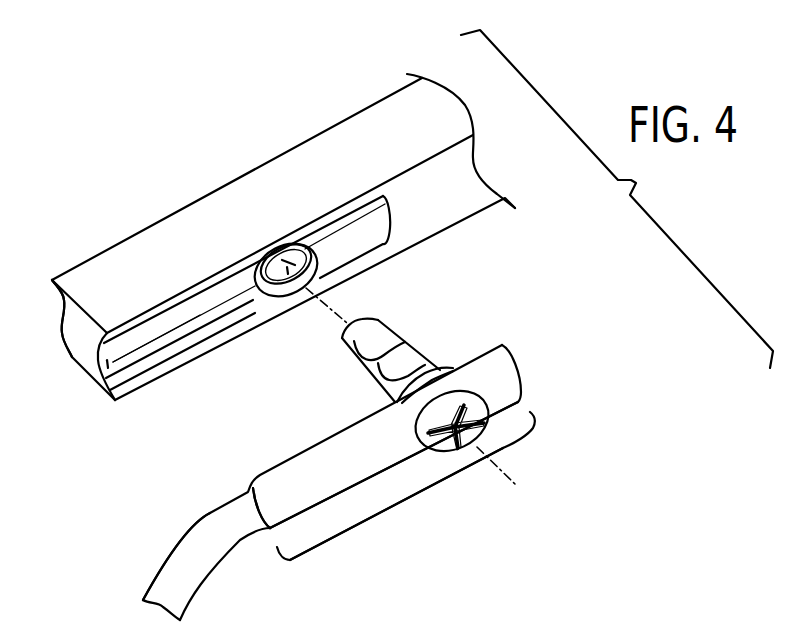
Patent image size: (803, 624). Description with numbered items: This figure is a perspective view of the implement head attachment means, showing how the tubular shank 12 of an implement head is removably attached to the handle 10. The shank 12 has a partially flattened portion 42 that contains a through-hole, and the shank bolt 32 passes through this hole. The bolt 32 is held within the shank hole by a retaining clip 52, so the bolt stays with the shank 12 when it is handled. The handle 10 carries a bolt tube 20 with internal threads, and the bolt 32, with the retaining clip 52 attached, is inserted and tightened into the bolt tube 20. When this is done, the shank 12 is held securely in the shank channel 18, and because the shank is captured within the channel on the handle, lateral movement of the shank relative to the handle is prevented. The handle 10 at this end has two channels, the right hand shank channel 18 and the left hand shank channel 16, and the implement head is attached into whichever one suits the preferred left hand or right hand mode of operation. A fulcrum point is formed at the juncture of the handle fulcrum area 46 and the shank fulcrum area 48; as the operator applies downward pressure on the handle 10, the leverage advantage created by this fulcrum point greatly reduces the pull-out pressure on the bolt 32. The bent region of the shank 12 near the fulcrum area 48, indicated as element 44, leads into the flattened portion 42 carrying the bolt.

The handle 10 is at (342, 124).
The shank 12 is at (212, 569).
The left hand shank channel 16 is at (62, 312).
The right hand shank channel 18 is at (142, 353).
The bolt tube 20 is at (280, 277).
The shank bolt 32 is at (408, 348).
The partially flattened portion 42 is at (412, 499).
The bent portion 44 is at (138, 590).
The handle fulcrum area 46 is at (98, 378).
The shank fulcrum area 48 is at (236, 486).
The retaining clip 52 is at (442, 365).